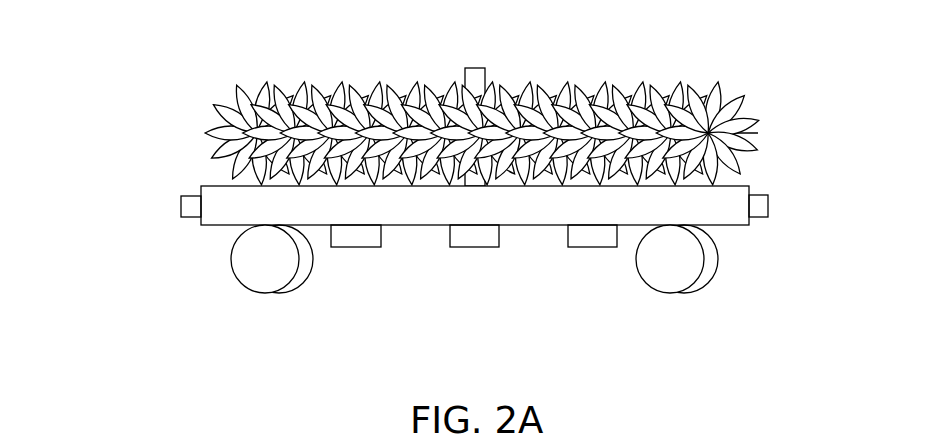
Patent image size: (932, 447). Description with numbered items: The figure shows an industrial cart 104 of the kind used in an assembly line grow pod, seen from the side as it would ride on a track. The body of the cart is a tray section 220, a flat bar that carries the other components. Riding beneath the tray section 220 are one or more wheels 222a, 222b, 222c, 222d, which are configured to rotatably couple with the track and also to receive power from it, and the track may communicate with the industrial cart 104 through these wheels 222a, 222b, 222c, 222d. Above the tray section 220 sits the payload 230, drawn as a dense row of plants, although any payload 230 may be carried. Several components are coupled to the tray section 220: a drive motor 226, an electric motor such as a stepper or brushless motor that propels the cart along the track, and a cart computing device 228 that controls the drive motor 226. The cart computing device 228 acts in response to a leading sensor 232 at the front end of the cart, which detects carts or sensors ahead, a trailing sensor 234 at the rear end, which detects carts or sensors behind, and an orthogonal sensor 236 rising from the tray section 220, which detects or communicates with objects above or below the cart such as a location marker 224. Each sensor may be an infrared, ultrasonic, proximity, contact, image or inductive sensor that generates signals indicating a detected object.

The industrial cart 104 is at (487, 209).
The tray section 220 is at (483, 152).
The payload 230 is at (620, 85).
The orthogonal sensor 236 is at (490, 80).
The leading sensor 232 is at (175, 223).
The trailing sensor 234 is at (773, 223).
The wheel 222a is at (235, 287).
The wheel 222b is at (673, 307).
The wheel 222c is at (312, 288).
The wheel 222d is at (715, 287).
The location marker 224 is at (373, 256).
The cart computing device 228 is at (478, 257).
The drive motor 226 is at (595, 258).